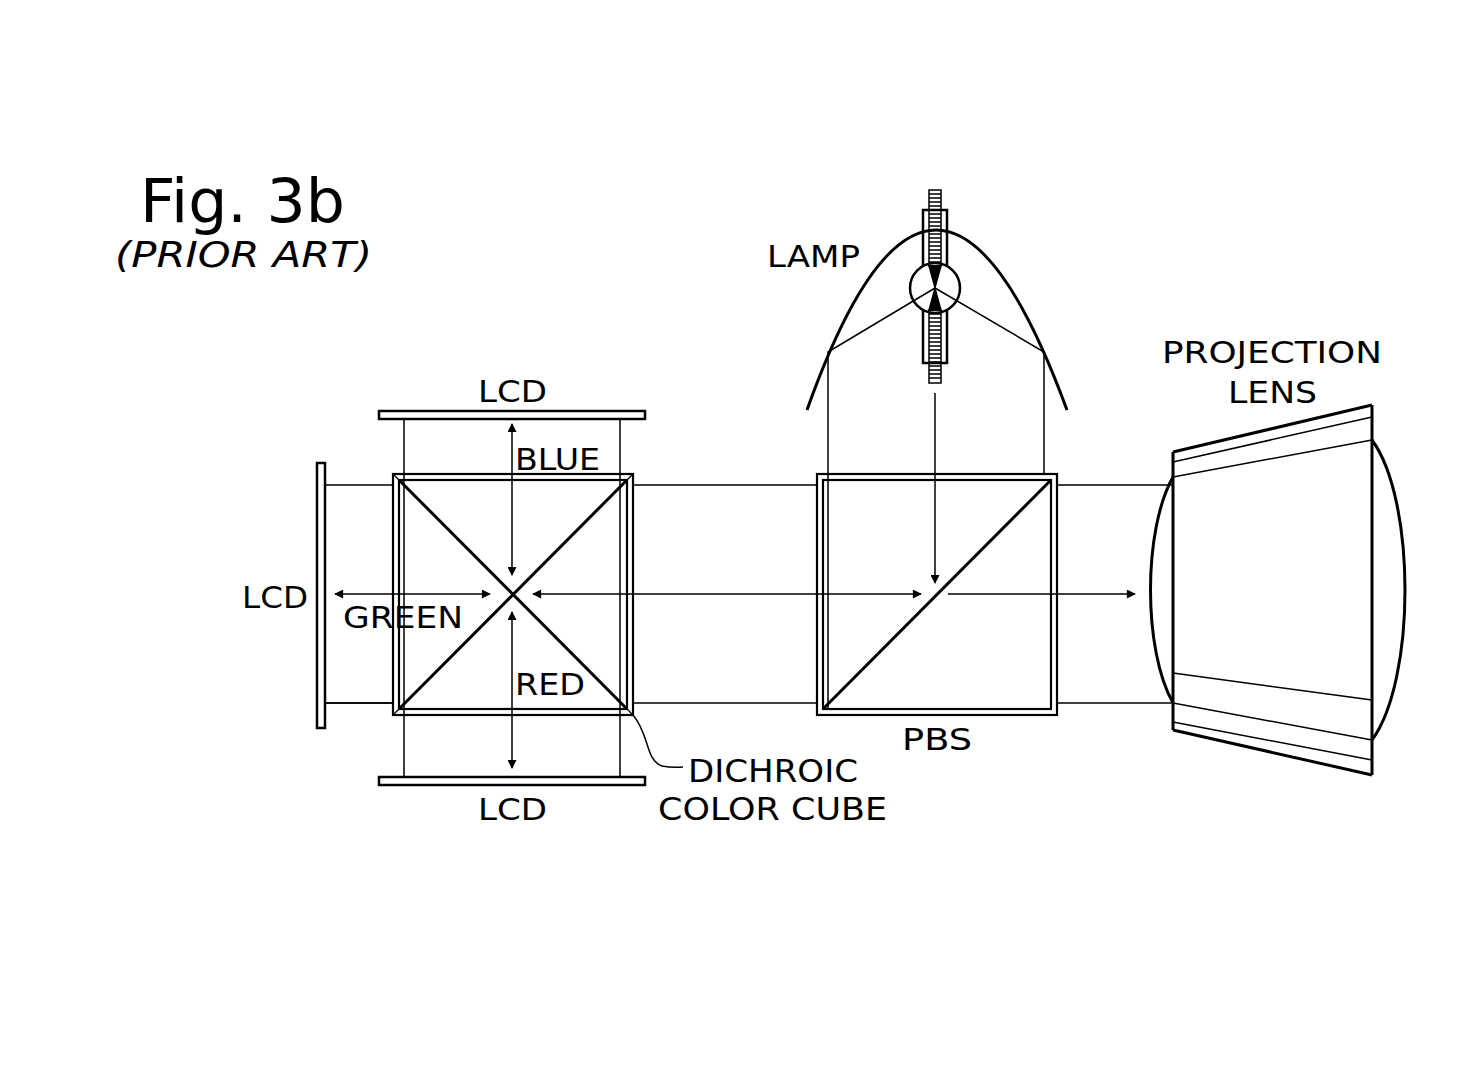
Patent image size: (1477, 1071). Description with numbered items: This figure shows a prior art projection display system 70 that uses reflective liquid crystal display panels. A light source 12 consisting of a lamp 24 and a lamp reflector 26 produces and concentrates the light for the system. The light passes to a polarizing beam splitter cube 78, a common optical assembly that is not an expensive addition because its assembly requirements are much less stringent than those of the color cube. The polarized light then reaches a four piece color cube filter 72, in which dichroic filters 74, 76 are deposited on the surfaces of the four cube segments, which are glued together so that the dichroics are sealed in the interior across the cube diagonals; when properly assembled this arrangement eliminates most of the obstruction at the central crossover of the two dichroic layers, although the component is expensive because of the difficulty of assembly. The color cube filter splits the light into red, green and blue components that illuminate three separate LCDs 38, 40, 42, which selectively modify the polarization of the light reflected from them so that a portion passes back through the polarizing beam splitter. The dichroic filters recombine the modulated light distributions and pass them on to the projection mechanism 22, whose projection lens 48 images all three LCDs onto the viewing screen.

The light source 12 is at (958, 267).
The projection mechanism 22 is at (1307, 623).
The lamp 24 is at (921, 346).
The lamp reflector 26 is at (1007, 276).
The LCD 38 is at (580, 411).
The LCD 40 is at (317, 670).
The LCD 42 is at (445, 788).
The projection lens 48 is at (1403, 630).
The system 70 is at (298, 832).
The four piece color cube filter 72 is at (352, 445).
The dichroic filter 74 is at (590, 525).
The dichroic filter 76 is at (443, 527).
The polarizing beam splitter cube 78 is at (942, 808).